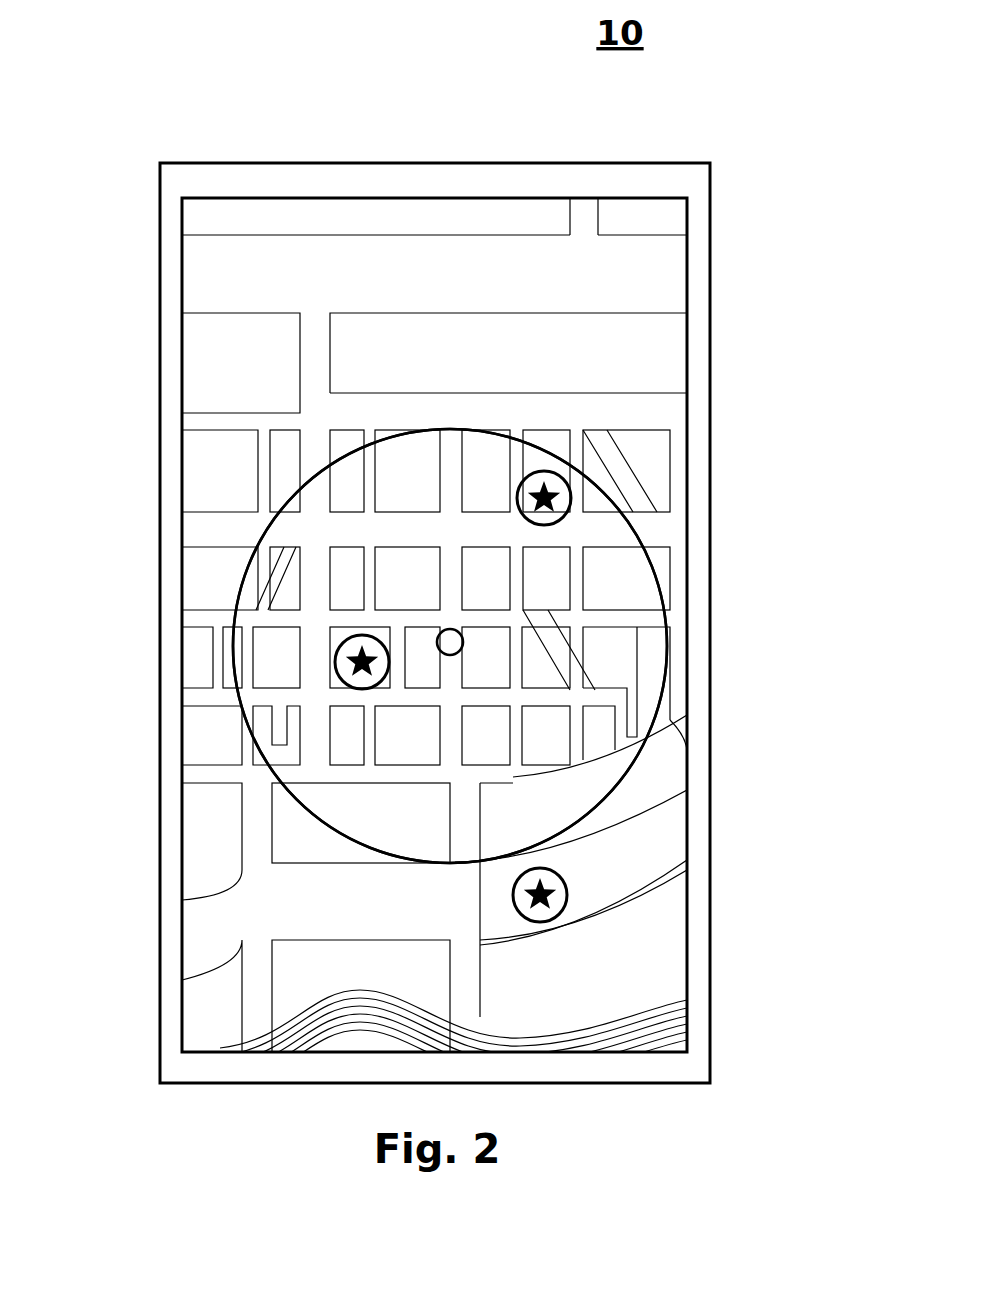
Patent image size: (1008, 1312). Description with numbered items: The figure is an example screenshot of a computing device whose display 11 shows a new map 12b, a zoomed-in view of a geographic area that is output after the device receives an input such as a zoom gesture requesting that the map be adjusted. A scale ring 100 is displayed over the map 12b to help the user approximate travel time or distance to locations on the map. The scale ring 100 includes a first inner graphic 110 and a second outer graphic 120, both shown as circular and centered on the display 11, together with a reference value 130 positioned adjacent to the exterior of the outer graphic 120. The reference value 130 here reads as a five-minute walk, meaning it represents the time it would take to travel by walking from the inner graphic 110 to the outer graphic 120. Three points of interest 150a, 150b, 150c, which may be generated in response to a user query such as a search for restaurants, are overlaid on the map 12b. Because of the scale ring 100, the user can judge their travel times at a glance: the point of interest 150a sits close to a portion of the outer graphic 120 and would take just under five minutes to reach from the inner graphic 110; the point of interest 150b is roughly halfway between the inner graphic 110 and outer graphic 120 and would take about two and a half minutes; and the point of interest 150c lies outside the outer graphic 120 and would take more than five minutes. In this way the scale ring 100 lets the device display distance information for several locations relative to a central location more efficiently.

The display 11 is at (690, 205).
The new map 12b is at (667, 303).
The scale ring 100 is at (552, 442).
The inner graphic 110 is at (463, 642).
The outer graphic 120 is at (658, 572).
The reference value 130 is at (375, 425).
The point of interest 150a is at (571, 497).
The point of interest 150b is at (335, 660).
The point of interest 150c is at (567, 890).